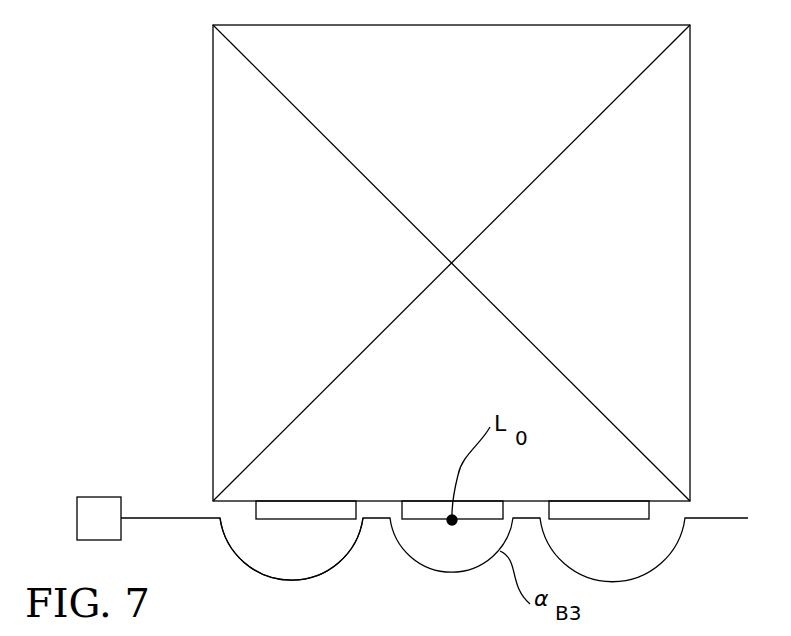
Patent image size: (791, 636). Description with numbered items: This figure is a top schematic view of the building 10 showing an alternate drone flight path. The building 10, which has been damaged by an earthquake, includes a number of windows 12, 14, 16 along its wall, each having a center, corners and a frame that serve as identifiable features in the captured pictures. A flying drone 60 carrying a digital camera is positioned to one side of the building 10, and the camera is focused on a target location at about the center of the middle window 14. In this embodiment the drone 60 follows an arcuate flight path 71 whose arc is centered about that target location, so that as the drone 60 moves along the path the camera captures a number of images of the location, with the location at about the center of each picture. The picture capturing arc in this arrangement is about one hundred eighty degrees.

The building 10 is at (213, 130).
The window 12 is at (258, 508).
The middle window 14 is at (405, 510).
The window 16 is at (549, 508).
The flying drone 60 is at (77, 512).
The arcuate flight path 71 is at (316, 580).